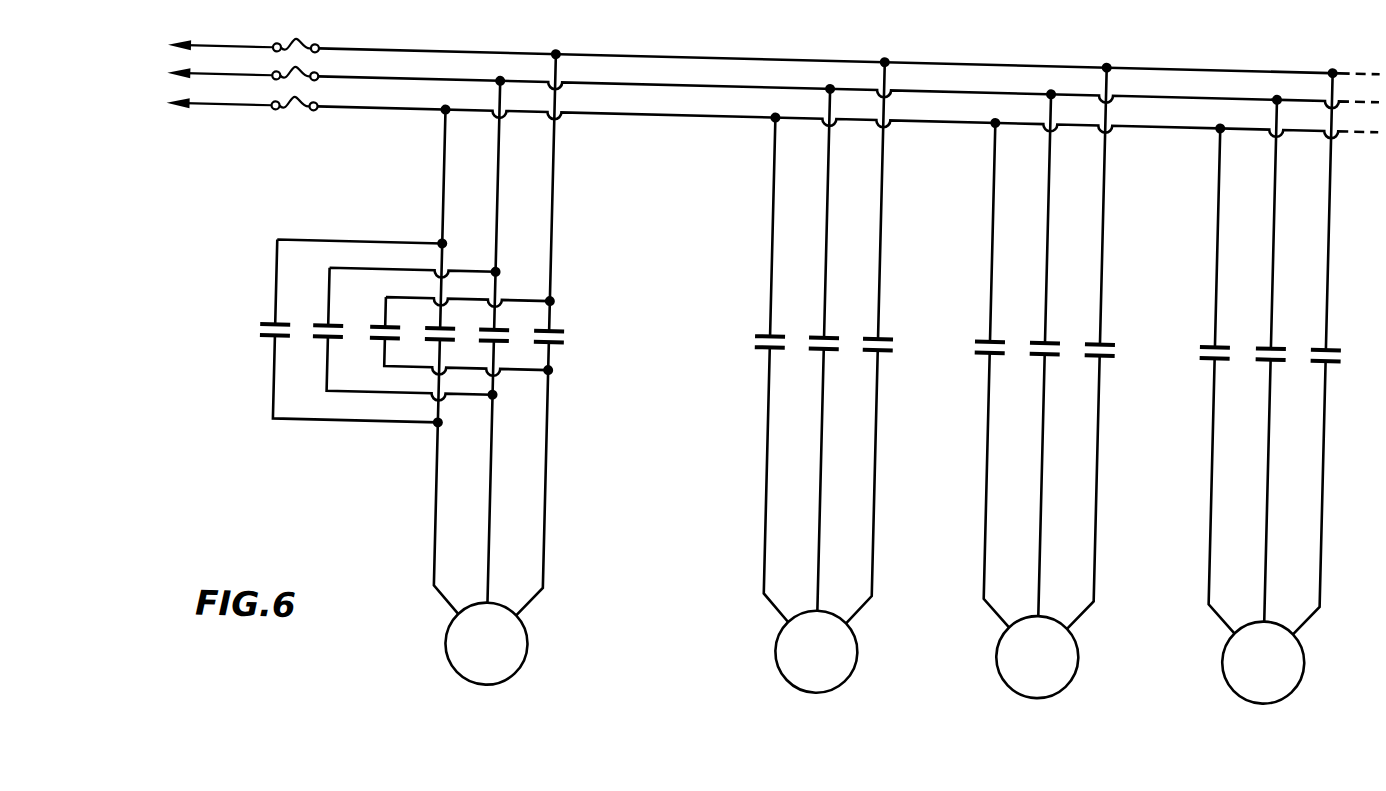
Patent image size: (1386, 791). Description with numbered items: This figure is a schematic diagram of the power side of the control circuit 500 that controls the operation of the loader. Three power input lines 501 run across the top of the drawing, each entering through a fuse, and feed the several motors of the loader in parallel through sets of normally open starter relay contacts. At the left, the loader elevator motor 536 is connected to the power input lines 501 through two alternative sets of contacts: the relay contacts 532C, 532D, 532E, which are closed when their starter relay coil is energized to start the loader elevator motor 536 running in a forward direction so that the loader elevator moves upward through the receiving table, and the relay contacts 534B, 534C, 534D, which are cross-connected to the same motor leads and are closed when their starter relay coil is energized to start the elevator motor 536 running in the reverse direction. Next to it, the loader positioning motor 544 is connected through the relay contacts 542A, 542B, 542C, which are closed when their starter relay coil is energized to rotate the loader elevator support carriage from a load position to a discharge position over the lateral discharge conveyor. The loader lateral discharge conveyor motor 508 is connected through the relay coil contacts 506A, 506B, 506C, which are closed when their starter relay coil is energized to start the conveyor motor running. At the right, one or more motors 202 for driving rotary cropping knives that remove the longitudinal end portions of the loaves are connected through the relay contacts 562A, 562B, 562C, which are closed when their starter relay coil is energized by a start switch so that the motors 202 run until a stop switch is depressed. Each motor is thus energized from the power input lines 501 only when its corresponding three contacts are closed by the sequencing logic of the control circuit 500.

The control circuit 500 is at (986, 22).
The power input lines 501 is at (200, 106).
The loader elevator motor 536 is at (521, 673).
The loader positioning motor 544 is at (851, 673).
The loader lateral discharge conveyor motor 508 is at (1072, 673).
The motors 202 is at (1302, 673).
The relay contacts 532C is at (461, 334).
The relay contacts 532D is at (516, 333).
The relay contacts 532E is at (569, 321).
The relay contacts 534B is at (279, 319).
The relay contacts 534C is at (327, 336).
The relay contacts 534D is at (382, 337).
The relay contacts 542A is at (769, 319).
The relay contacts 542B is at (819, 334).
The relay contacts 542C is at (918, 317).
The relay coil contacts 506A is at (989, 337).
The relay coil contacts 506B is at (1057, 318).
The relay coil contacts 506C is at (1117, 336).
The relay contacts 562A is at (1212, 321).
The relay contacts 562B is at (1268, 336).
The relay contacts 562C is at (1325, 319).